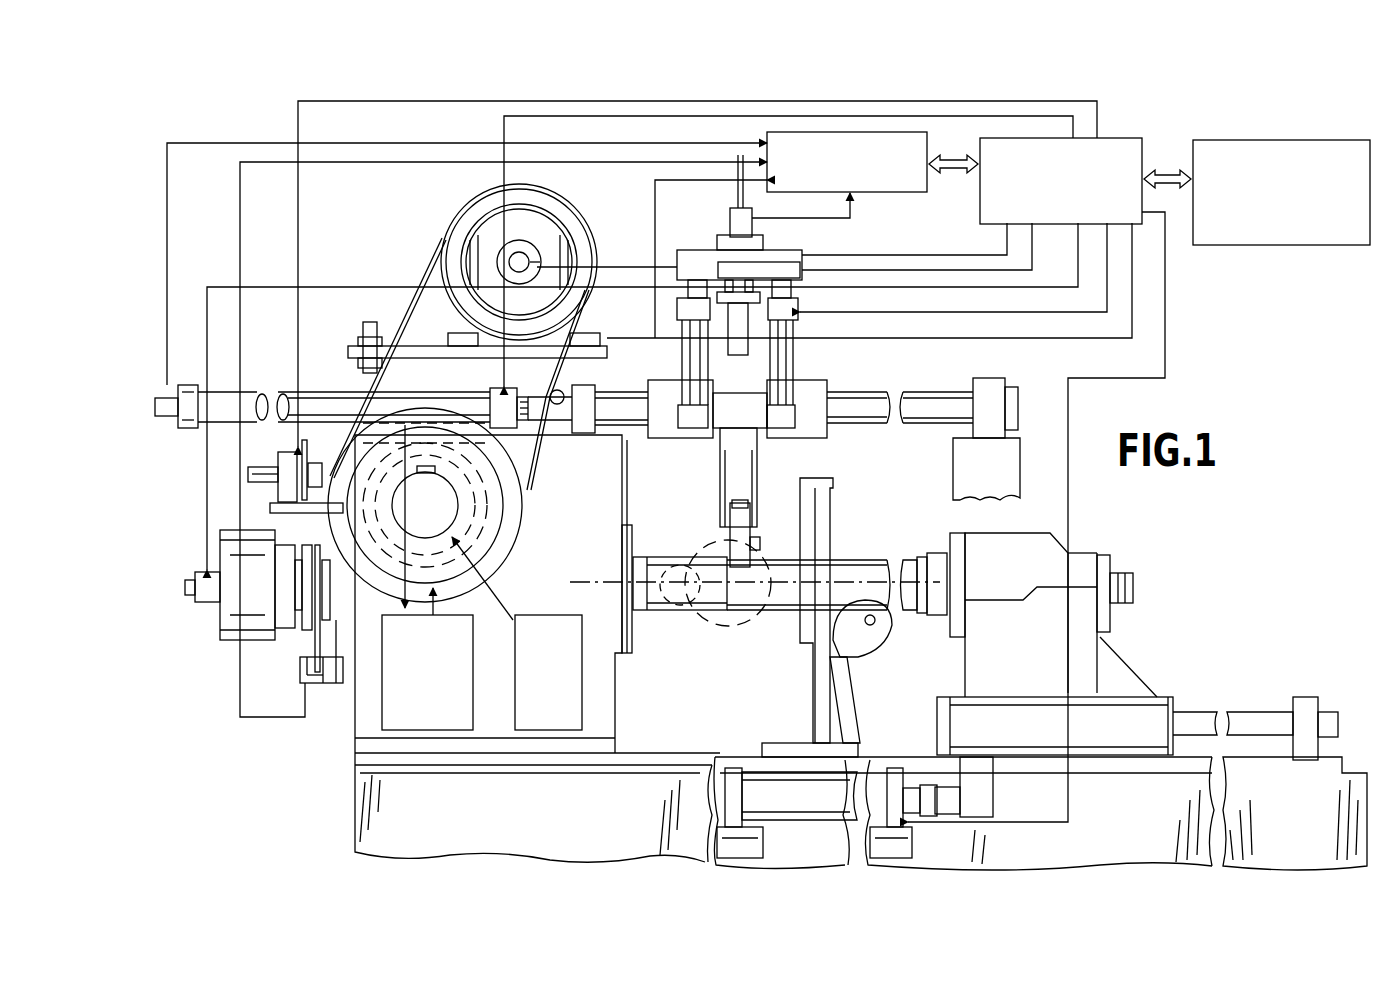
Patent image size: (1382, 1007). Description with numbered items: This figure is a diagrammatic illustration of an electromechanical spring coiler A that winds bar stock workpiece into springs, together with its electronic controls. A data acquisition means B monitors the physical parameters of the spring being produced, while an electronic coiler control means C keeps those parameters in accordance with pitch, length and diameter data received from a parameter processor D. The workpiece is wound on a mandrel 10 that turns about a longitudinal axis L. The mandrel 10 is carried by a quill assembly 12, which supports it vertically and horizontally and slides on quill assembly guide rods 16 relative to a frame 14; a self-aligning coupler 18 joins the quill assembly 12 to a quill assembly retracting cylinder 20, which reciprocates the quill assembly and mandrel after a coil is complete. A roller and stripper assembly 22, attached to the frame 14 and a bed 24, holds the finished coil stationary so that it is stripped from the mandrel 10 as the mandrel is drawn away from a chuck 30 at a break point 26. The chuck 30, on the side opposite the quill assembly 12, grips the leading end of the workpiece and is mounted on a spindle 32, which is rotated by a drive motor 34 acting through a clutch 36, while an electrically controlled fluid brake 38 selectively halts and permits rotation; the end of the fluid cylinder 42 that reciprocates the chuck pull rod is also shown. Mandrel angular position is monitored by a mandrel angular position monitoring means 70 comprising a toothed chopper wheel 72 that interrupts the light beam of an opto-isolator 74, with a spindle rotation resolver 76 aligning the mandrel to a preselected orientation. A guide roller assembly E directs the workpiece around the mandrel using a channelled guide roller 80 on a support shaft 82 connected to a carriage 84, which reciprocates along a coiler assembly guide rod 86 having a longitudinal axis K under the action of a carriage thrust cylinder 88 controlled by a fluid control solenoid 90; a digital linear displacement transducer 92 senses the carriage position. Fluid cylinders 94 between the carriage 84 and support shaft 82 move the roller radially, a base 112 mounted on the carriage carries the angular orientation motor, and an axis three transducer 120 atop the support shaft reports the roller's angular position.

The mandrel 10 is at (848, 560).
The quill assembly 12 is at (1060, 545).
The frame 14 is at (532, 828).
The quill assembly guide rods 16 is at (1193, 712).
The self-aligning coupler 18 is at (945, 812).
The quill assembly retracting cylinder 20 is at (805, 810).
The roller and stripper assembly 22 is at (810, 718).
The bed 24 is at (625, 755).
The break point 26 is at (733, 610).
The chuck 30 is at (663, 615).
The spindle 32 is at (635, 557).
The drive motor 34 is at (580, 208).
The clutch 36 is at (473, 653).
The fluid brake 38 is at (582, 628).
The end of fluid controlled cylinder 42 is at (210, 603).
The mandrel angular position monitoring means 70 is at (278, 697).
The chopper wheel 72 is at (313, 645).
The opto-isolator 74 is at (323, 683).
The spindle rotation resolver 76 is at (283, 460).
The guide roller 80 is at (740, 527).
The support shaft 82 is at (752, 462).
The carriage or follower member 84 is at (655, 383).
The coiler assembly guide rod 86 is at (868, 392).
The carriage thrust cylinder 88 is at (350, 390).
The fluid control solenoid 90 is at (497, 392).
The digital linear displacement transducer 92 is at (173, 428).
The electrically controlled fluid cylinders 94 is at (798, 363).
The base 112 is at (765, 262).
The axis 3 transducer 120 is at (730, 222).
The electromechanical spring coiler A is at (1218, 410).
The data acquisition means B is at (890, 192).
The electronic coiler control means C is at (1117, 138).
The parameter processor D is at (1277, 140).
The guide roller assembly E is at (687, 490).
The longitudinal axis of guide rod K is at (1018, 406).
The longitudinal axis L is at (677, 585).